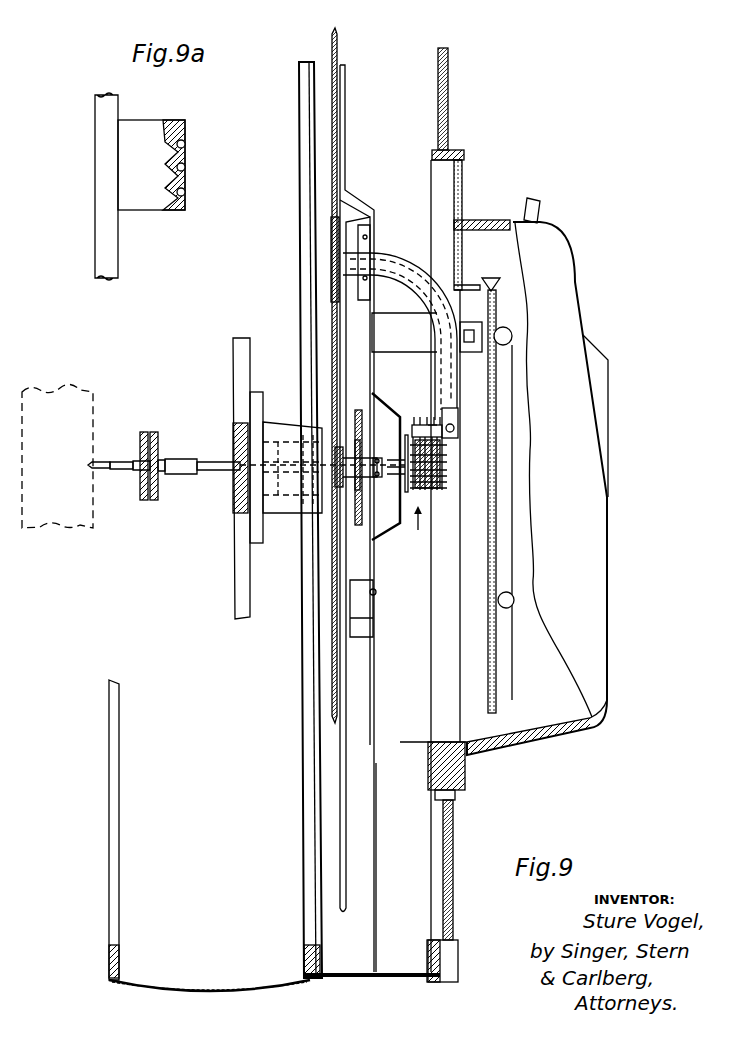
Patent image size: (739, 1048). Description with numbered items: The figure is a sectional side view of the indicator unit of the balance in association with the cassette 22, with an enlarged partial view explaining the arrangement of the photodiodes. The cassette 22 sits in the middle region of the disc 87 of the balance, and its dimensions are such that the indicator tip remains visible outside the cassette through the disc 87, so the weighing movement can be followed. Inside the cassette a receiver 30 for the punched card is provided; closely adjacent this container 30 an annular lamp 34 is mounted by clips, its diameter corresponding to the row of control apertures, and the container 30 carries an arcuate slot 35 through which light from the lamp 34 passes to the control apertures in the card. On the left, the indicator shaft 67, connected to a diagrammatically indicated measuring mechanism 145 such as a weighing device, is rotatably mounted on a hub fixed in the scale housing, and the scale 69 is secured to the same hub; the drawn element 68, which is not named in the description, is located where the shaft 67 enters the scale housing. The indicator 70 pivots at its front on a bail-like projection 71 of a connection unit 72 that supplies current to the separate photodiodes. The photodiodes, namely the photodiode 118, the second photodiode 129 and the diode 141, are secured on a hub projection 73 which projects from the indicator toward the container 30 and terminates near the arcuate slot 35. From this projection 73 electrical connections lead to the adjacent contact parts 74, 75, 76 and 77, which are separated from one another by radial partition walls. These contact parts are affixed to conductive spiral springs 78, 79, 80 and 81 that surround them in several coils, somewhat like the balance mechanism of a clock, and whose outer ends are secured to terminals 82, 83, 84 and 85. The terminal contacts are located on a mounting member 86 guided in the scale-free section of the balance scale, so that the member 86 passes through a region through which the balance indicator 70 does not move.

In FIG. 9, the cassette 22 is at (600, 645).
In FIG. 9, the receiver 30 is at (495, 297).
In FIG. 9, the annular lamp 34 is at (512, 336).
In FIG. 9, the slot 35 is at (497, 323).
In FIG. 9, the indicator shaft 67 is at (218, 465).
In FIG. 9, the housing 68 is at (277, 430).
In FIG. 9, the scale 69 is at (333, 43).
In FIG. 9, the indicator 70 is at (348, 183).
In FIG. 9, the bail-like projection 71 is at (385, 538).
In FIG. 9, the connection unit 72 is at (419, 533).
In FIG. 9A, the hub projection 73 is at (137, 130).
In FIG. 9, the hub projection 73 is at (397, 323).
In FIG. 9, the contact part 74 is at (440, 472).
In FIG. 9, the contact part 75 is at (438, 480).
In FIG. 9, the contact part 76 is at (434, 486).
In FIG. 9, the contact part 77 is at (430, 490).
In FIG. 9, the conductive spiral spring 78 is at (447, 438).
In FIG. 9, the conductive spiral spring 79 is at (447, 445).
In FIG. 9, the conductive spiral spring 80 is at (447, 455).
In FIG. 9, the conductive spiral spring 81 is at (447, 462).
In FIG. 9, the terminal 82 is at (415, 418).
In FIG. 9, the terminal 83 is at (427, 417).
In FIG. 9, the terminal 84 is at (428, 417).
In FIG. 9, the terminal 85 is at (433, 422).
In FIG. 9, the mounting member 86 is at (393, 267).
In FIG. 9, the disc 87 is at (452, 837).
In FIG. 9A, the photodiode 118 is at (187, 143).
In FIG. 9A, the second photodiode 129 is at (185, 167).
In FIG. 9A, the diode 141 is at (185, 193).
In FIG. 9, the measuring mechanism 145 is at (75, 523).